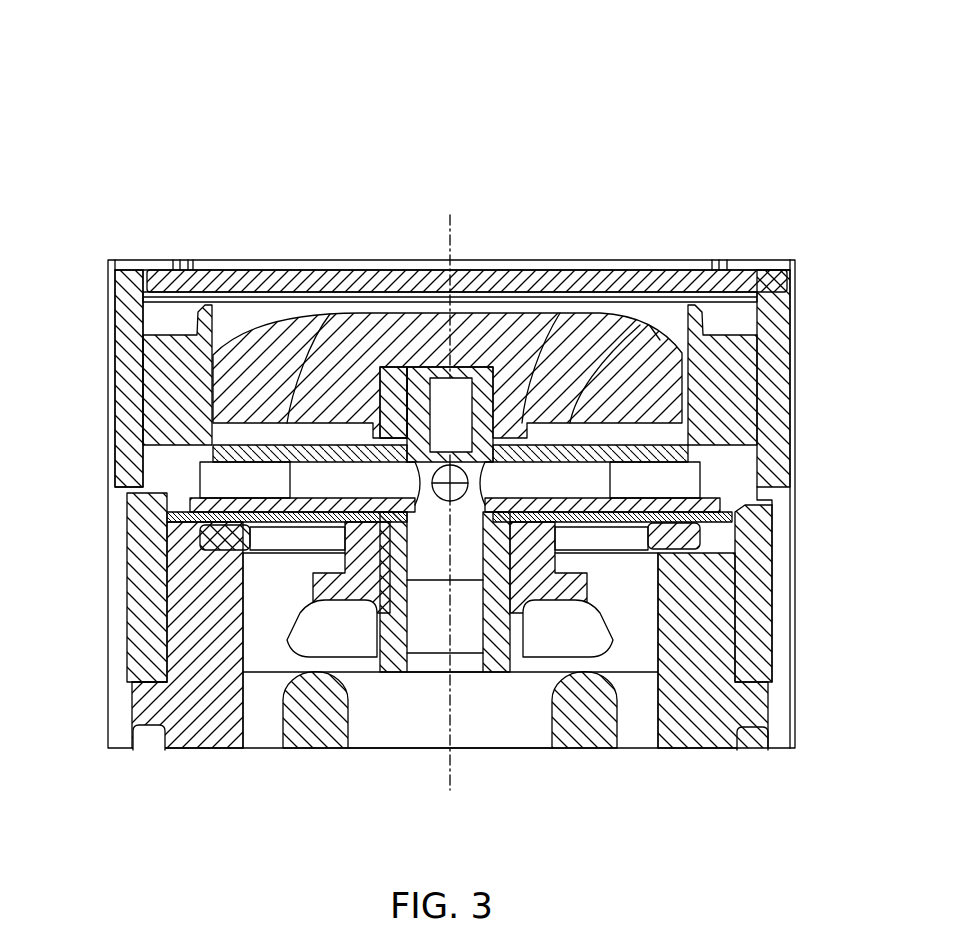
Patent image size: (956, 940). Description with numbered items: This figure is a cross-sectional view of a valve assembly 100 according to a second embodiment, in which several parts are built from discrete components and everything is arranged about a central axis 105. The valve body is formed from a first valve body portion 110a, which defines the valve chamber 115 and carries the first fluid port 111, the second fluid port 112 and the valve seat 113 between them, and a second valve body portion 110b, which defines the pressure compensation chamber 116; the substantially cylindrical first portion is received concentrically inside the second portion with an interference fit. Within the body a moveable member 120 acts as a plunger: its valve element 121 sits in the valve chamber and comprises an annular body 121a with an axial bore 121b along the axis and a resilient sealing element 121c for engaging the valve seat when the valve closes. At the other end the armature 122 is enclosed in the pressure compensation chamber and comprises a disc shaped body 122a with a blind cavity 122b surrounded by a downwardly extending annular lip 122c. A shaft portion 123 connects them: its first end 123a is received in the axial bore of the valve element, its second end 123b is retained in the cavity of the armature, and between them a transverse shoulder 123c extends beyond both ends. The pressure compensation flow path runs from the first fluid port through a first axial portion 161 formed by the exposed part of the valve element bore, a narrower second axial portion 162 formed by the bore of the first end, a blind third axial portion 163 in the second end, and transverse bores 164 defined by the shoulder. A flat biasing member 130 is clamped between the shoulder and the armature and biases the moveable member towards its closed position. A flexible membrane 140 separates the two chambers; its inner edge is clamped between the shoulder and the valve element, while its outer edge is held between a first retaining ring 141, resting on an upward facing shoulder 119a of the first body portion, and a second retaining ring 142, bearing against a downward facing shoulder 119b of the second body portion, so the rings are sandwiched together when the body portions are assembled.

The valve assembly 100 is at (85, 102).
The axis 105 is at (468, 262).
The first valve body portion 110a is at (710, 748).
The second valve body portion 110b is at (785, 522).
The first fluid port 111 is at (477, 735).
The second fluid port 112 is at (260, 748).
The valve seat 113 is at (598, 720).
The valve chamber 115 is at (262, 690).
The pressure compensation chamber 116 is at (215, 278).
The upward facing shoulder 119a is at (760, 573).
The downward facing shoulder 119b is at (763, 480).
The moveable member 120 is at (648, 330).
The valve element 121 is at (312, 578).
The annular body 121a is at (257, 698).
The axial bore 121b is at (590, 612).
The resilient sealing element 121c is at (330, 640).
The armature 122 is at (287, 308).
The disc shaped body 122a is at (290, 342).
The cavity 122b is at (520, 355).
The annular lip 122c is at (575, 345).
The shaft portion 123 is at (230, 323).
The first end 123a is at (270, 560).
The second end 123b is at (436, 432).
The transverse shoulder 123c is at (740, 440).
The biasing member 130 is at (793, 352).
The flexible membrane 140 is at (290, 515).
The first retaining ring 141 is at (290, 530).
The second retaining ring 142 is at (245, 485).
The first axial portion 161 is at (640, 655).
The second axial portion 162 is at (480, 556).
The third axial portion 163 is at (355, 366).
The transverse bores 164 is at (545, 485).